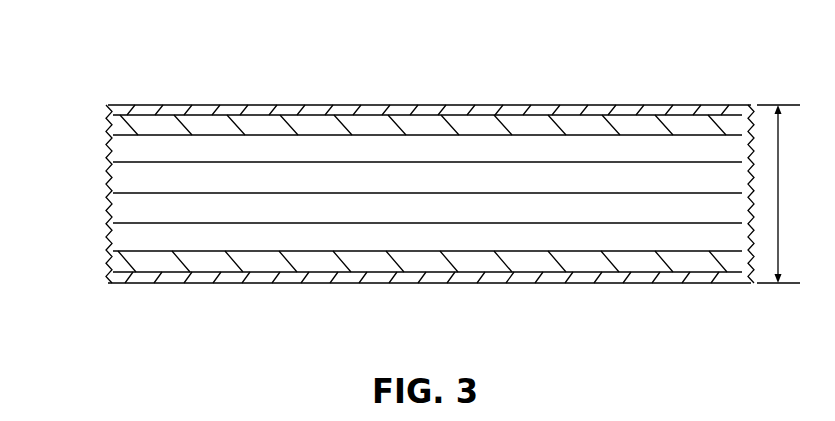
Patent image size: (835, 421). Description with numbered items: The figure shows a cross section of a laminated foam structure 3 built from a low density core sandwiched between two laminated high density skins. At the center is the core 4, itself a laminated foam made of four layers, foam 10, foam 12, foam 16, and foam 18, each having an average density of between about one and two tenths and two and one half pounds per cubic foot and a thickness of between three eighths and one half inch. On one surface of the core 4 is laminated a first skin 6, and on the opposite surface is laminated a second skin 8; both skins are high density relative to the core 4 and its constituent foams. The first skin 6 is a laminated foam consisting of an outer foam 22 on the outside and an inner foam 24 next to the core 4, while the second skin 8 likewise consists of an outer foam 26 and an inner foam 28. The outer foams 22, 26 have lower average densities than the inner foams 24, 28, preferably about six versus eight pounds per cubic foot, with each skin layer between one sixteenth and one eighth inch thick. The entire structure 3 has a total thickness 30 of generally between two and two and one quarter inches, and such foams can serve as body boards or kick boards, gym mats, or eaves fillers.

The laminated foam structure 3 is at (177, 72).
The core 4 is at (402, 198).
The first skin 6 is at (395, 100).
The second skin 8 is at (395, 293).
The foam 10 is at (578, 238).
The foam 12 is at (635, 208).
The foam 16 is at (557, 177).
The foam 18 is at (500, 148).
The outer foam 22 is at (267, 112).
The inner foam 24 is at (350, 130).
The outer foam 26 is at (377, 275).
The inner foam 28 is at (467, 260).
The total thickness 30 is at (778, 194).